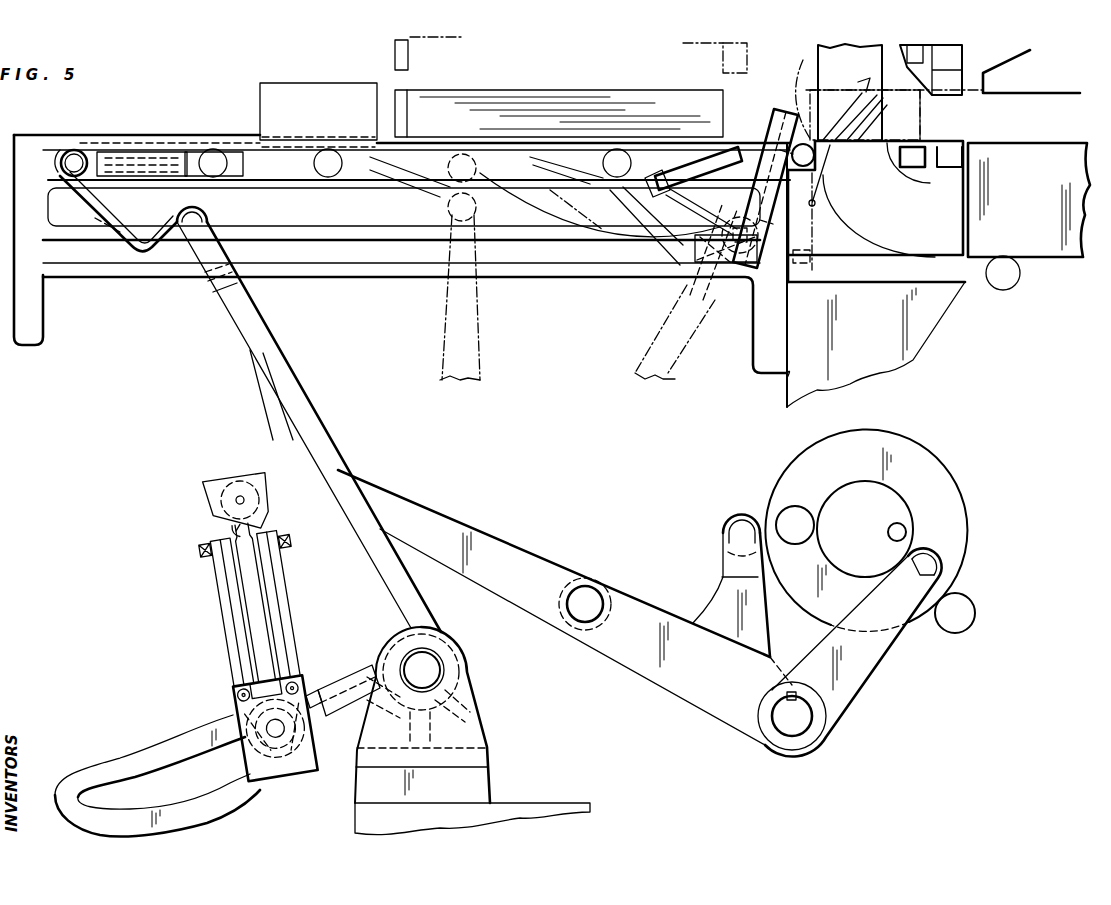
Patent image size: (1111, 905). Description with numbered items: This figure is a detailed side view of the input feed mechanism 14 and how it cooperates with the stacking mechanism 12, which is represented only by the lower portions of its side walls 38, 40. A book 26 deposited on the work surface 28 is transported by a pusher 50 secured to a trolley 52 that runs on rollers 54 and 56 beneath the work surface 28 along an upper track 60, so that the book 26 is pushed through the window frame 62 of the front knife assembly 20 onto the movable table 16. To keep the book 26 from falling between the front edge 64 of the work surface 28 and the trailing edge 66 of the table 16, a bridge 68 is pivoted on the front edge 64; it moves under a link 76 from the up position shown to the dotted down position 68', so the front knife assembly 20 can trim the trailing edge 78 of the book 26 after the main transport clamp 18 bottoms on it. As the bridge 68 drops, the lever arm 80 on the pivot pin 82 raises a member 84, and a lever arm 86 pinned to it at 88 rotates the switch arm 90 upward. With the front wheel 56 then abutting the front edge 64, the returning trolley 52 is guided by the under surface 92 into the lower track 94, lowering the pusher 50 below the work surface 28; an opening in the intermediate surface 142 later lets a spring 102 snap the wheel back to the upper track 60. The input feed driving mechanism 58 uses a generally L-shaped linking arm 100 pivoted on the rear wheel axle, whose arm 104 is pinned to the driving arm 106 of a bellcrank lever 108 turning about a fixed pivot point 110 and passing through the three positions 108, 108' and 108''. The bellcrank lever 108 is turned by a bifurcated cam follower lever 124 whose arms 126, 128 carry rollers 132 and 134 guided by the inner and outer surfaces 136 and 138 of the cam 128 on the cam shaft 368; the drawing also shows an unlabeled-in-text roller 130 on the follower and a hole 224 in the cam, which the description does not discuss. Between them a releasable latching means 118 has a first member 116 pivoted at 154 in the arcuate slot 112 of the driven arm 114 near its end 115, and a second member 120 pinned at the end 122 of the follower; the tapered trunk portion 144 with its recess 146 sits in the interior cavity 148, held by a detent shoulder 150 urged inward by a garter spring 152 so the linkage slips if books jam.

The stacking mechanism 12 is at (565, 63).
The input feed mechanism 14 is at (94, 441).
The movable table 16 is at (1044, 201).
The main transport clamp 18 is at (1044, 79).
The front knife assembly 20 is at (879, 216).
The book 26 is at (663, 73).
The work surface 28 is at (236, 142).
The side wall 38 is at (395, 48).
The side wall 40 is at (738, 64).
The pusher 50 is at (316, 88).
The trolley 52 is at (162, 130).
The roller 54 is at (75, 150).
The roller 56 is at (213, 149).
The input feed driving mechanism 58 is at (555, 693).
The upper track 60 is at (294, 188).
The window frame 62 is at (860, 228).
The front edge 64 is at (787, 378).
The trailing edge 66 is at (968, 250).
The bridge 68 is at (922, 175).
The bridge down position 68' is at (821, 207).
The link 76 is at (893, 116).
The trailing edge 78 is at (930, 121).
The lever arm 80 is at (808, 95).
The pivot pin 82 is at (863, 95).
The member 84 is at (772, 232).
The lever arm 86 is at (680, 192).
The pin 88 is at (740, 283).
The switch arm 90 is at (676, 163).
The under surface 92 is at (776, 143).
The lower track 94 is at (312, 232).
The linking arm 100 is at (92, 212).
The spring 102 is at (98, 183).
The arm 104 is at (186, 210).
The driving arm 106 is at (202, 284).
The bellcrank lever 108 is at (309, 427).
The bellcrank lever center position 108' is at (489, 297).
The bellcrank lever final position 108'' is at (682, 337).
The fixed pivot point 110 is at (423, 668).
The arcuate slot 112 is at (150, 789).
The driven arm 114 is at (90, 767).
The end 115 is at (67, 810).
The first member 116 is at (235, 632).
The releasable latching means 118 is at (192, 547).
The second member 120 is at (214, 482).
The end 122 is at (241, 497).
The cam follower lever 124 is at (462, 512).
The arm 126 is at (521, 548).
The cam 128 is at (718, 596).
The roller 130 is at (590, 598).
The roller 132 is at (922, 552).
The roller 134 is at (739, 512).
The inner surface 136 is at (905, 500).
The outer surface 138 is at (803, 448).
The intermediate surface 142 is at (540, 198).
The tapered trunk portion 144 is at (232, 606).
The recess 146 is at (234, 556).
The interior cavity 148 is at (248, 648).
The detent shoulder 150 is at (230, 540).
The garter spring 152 is at (203, 560).
The pivot point 154 is at (277, 742).
The hole 224 is at (822, 483).
The cam shaft 368 is at (888, 528).